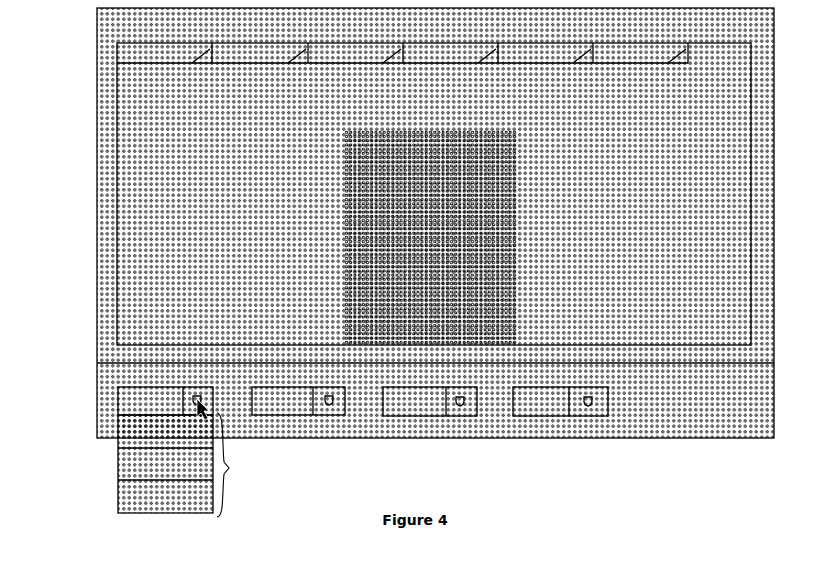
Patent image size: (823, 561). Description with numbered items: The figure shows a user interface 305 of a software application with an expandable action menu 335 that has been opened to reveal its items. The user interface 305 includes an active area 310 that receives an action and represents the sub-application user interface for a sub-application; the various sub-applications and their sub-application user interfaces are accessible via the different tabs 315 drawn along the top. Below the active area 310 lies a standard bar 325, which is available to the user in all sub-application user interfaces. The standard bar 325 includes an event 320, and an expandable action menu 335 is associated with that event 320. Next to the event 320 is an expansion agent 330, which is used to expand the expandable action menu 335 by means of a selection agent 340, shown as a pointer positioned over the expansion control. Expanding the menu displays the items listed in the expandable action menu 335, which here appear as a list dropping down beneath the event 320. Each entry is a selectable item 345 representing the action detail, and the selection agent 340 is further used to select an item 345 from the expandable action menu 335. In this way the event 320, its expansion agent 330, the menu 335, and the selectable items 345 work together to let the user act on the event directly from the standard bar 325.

The user interface 305 is at (97, 220).
The active area 310 is at (434, 194).
The tabs 315 is at (128, 53).
The event 320 is at (132, 412).
The standard bar 325 is at (107, 368).
The expansion agent 330 is at (345, 413).
The expandable action menu 335 is at (240, 465).
The selection agent 340 is at (207, 407).
The selectable item 345 is at (138, 443).